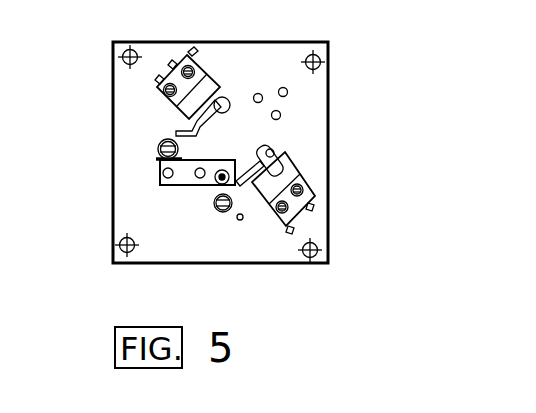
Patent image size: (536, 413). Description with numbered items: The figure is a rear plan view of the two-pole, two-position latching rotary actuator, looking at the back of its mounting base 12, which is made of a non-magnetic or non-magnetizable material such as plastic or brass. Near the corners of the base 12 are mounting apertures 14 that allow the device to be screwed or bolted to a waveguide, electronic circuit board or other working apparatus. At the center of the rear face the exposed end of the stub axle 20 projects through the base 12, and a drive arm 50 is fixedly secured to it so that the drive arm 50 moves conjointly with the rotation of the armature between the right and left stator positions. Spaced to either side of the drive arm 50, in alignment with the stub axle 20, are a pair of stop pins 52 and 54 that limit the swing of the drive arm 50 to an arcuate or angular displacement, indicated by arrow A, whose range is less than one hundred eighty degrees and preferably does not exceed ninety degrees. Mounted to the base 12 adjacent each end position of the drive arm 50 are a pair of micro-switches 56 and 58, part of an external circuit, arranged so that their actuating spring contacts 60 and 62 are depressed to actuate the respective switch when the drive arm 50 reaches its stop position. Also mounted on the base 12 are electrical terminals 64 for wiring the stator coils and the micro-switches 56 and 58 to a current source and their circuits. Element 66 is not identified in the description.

The mounting base 12 is at (325, 140).
The mounting apertures 14 is at (135, 50).
The stub axle 20 is at (200, 180).
The drive arm 50 is at (185, 180).
The stop pin 52 is at (162, 151).
The stop pin 54 is at (223, 213).
The micro-switch 56 is at (203, 83).
The micro-switch 58 is at (313, 183).
The actuating spring contact 60 is at (176, 132).
The actuating spring contact 62 is at (250, 192).
The electrical terminals 64 is at (288, 92).
The contact strip 66 is at (160, 164).
The arrow A is at (202, 137).